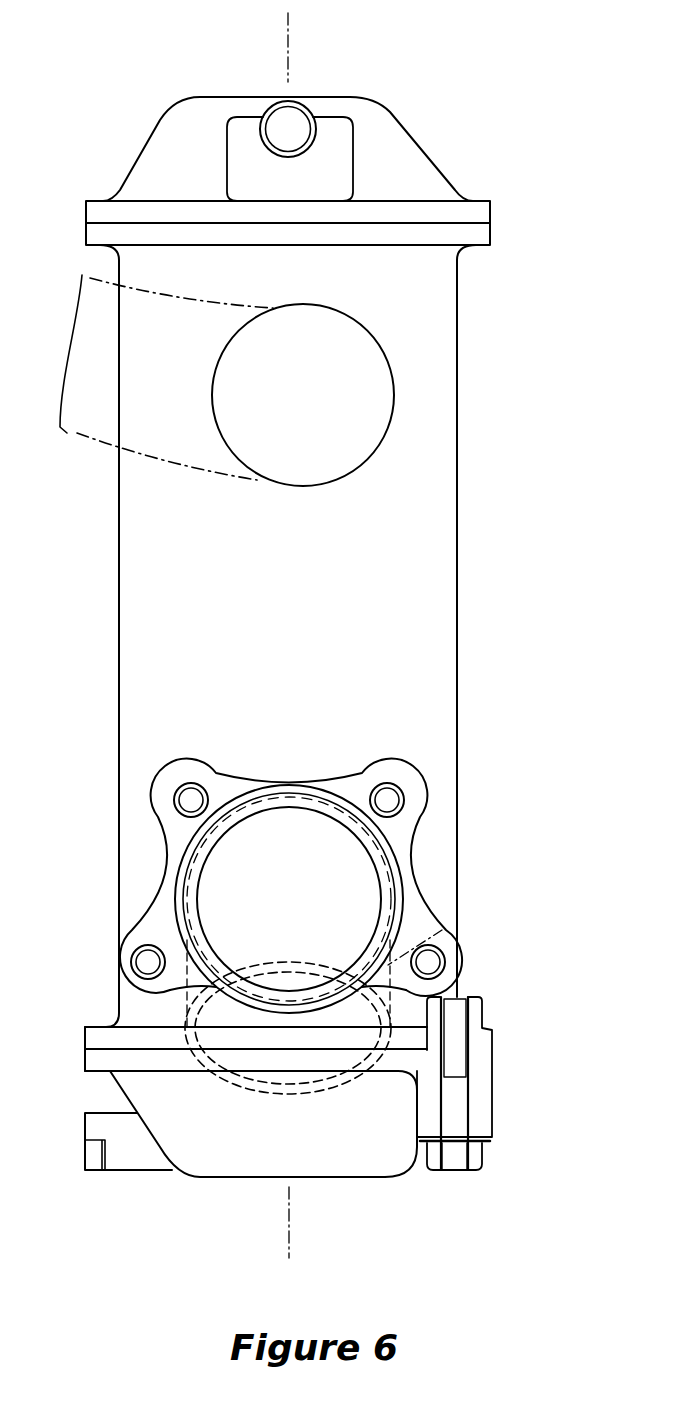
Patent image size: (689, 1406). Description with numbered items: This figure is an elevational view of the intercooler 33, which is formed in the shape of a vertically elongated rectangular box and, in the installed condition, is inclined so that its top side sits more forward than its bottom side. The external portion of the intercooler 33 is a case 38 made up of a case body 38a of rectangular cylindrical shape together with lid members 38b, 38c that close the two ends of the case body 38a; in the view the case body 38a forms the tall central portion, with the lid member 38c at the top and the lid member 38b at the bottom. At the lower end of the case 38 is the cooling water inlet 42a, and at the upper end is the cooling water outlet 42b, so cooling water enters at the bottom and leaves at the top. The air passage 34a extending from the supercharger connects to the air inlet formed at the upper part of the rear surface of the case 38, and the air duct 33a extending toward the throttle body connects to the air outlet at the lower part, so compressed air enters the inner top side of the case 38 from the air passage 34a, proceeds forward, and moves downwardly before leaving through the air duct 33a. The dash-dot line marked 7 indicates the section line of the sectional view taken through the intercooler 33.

The section line VII-VII 7 is at (282, 13).
The intercooler 33 is at (494, 124).
The air duct 33a is at (460, 931).
The air passage 34a is at (91, 452).
The case 38 is at (477, 398).
The case body 38a is at (453, 523).
The lid member 38b is at (370, 1168).
The lid member 38c is at (347, 97).
The cooling water inlet 42a is at (135, 1158).
The cooling water outlet 42b is at (281, 160).